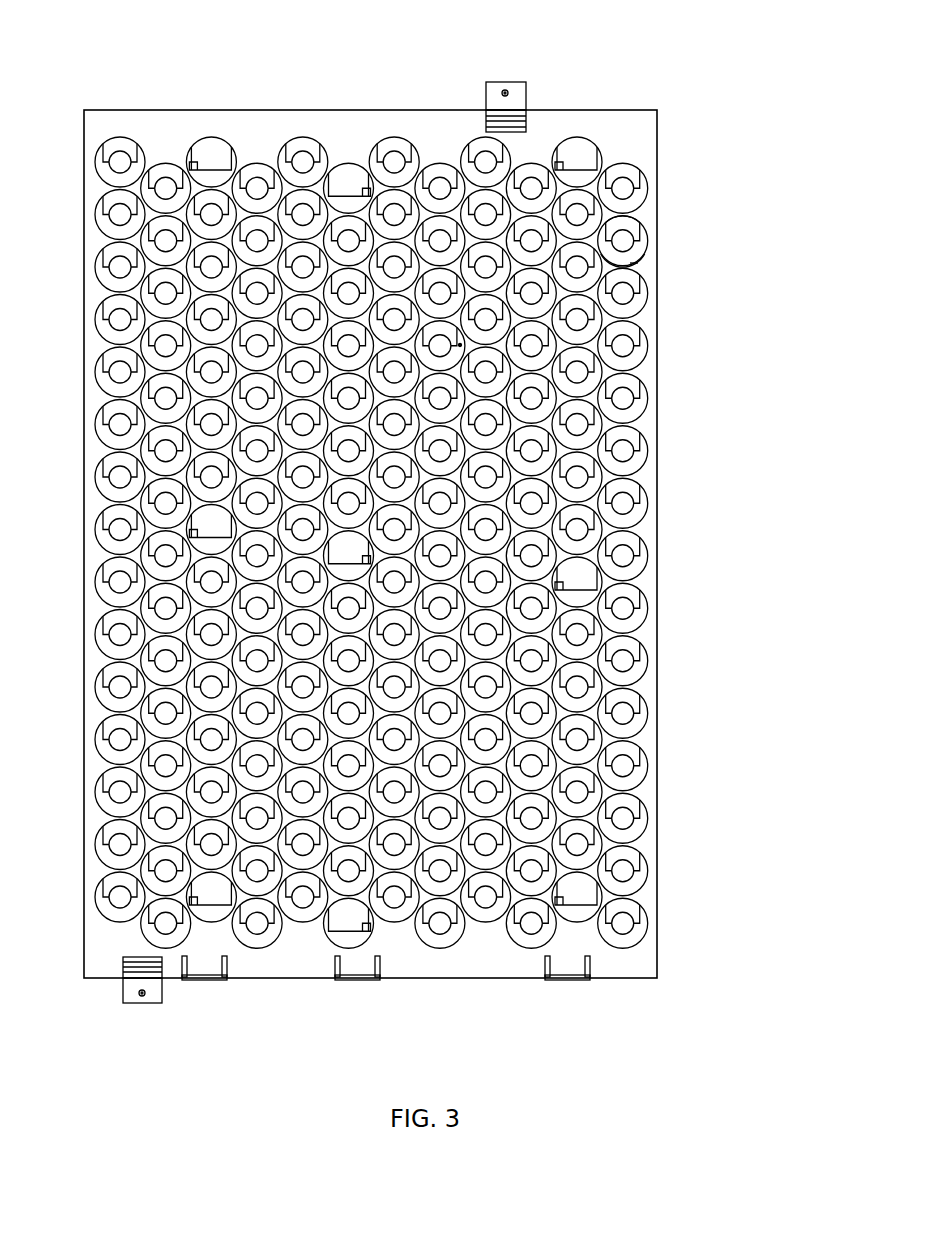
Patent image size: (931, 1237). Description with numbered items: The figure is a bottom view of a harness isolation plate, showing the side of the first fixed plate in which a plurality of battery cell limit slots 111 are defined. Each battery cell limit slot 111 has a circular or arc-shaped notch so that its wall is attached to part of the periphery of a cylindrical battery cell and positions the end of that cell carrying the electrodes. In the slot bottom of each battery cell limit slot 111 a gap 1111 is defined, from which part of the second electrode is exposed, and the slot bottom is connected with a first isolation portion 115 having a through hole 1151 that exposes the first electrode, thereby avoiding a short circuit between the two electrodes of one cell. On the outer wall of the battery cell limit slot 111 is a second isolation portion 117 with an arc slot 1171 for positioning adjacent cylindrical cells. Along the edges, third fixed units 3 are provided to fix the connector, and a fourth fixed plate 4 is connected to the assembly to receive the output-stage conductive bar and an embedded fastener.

The third fixed unit 3 is at (362, 978).
The fourth fixed plate 4 is at (497, 98).
The battery cell limit slot 111 is at (632, 262).
The gap 1111 is at (630, 221).
The first isolation portion 115 is at (627, 241).
The through hole 1151 is at (640, 253).
The second isolation portion 117 is at (630, 263).
The arc slot 1171 is at (636, 270).